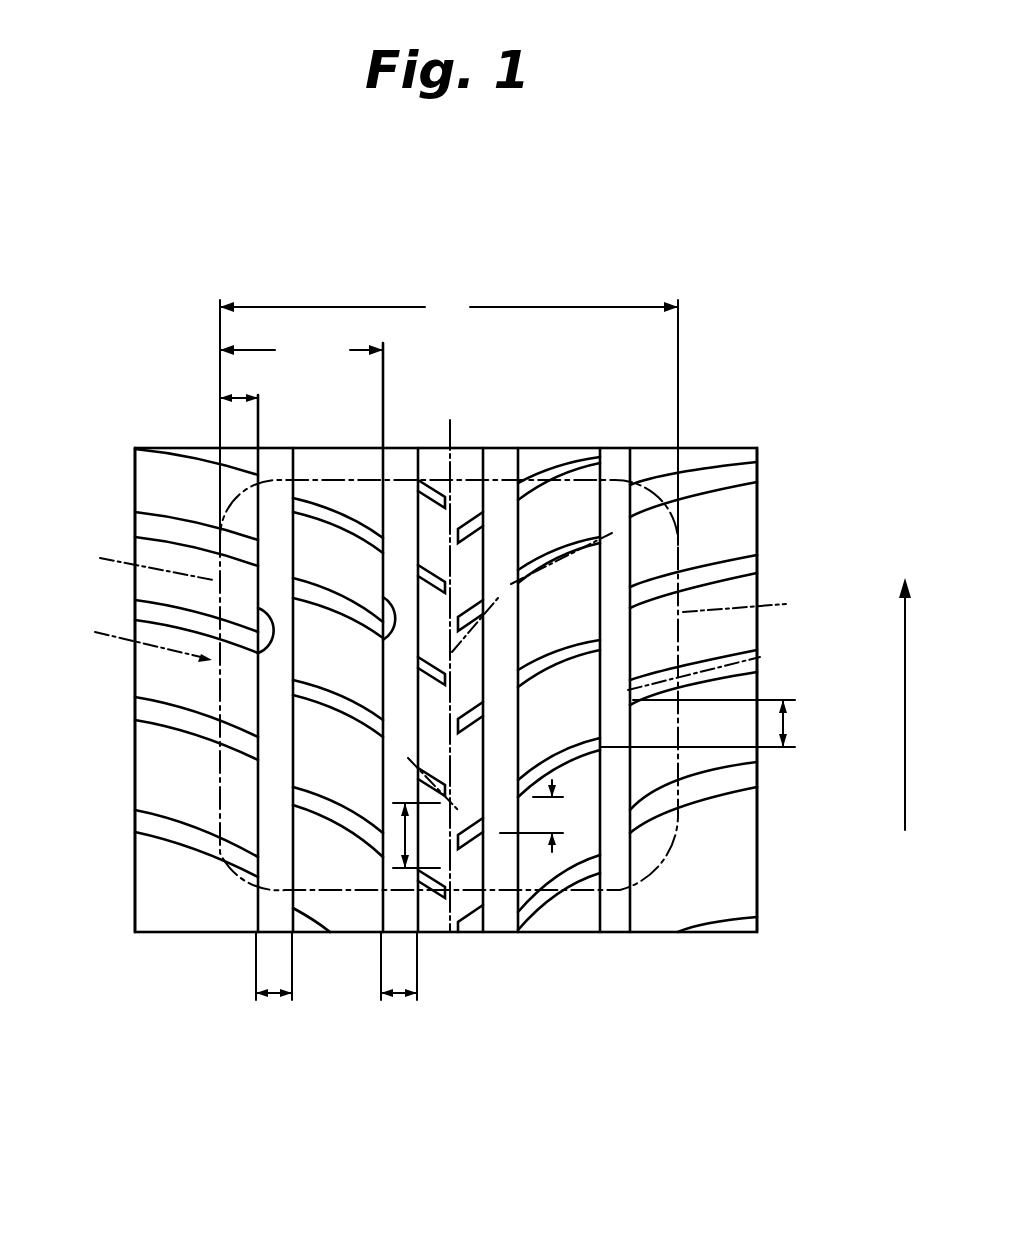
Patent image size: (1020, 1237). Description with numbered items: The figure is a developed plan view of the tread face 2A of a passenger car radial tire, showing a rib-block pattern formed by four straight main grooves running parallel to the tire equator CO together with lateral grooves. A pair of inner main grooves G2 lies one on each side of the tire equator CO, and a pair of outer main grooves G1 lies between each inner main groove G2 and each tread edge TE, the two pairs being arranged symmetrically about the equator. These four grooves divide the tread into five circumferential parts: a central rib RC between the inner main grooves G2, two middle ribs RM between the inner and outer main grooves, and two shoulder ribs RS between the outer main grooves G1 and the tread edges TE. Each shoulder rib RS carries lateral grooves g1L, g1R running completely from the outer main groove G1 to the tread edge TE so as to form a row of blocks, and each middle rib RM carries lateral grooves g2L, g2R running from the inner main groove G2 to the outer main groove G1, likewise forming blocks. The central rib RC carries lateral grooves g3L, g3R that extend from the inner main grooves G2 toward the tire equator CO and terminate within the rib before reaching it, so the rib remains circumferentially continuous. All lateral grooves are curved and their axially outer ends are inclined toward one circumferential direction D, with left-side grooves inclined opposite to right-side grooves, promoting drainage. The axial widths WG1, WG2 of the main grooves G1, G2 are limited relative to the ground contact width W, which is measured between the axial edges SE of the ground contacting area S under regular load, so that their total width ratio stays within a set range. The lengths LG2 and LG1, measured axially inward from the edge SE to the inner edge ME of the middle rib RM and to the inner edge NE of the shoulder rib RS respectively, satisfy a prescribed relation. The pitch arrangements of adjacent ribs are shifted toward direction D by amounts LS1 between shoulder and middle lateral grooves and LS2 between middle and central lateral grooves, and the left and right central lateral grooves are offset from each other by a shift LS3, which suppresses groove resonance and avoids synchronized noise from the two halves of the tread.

The tread face 2A is at (178, 477).
The tread edge TE is at (135, 888).
The shoulder rib RS is at (680, 447).
The middle rib RM is at (565, 447).
The central rib RC is at (468, 452).
The tire equator CO is at (456, 422).
The outer main groove G1 is at (278, 460).
The inner main groove G2 is at (398, 460).
The left shoulder lateral groove g1L is at (165, 830).
The right shoulder lateral groove g1R is at (740, 778).
The left middle lateral groove g2L is at (345, 830).
The right middle lateral groove g2R is at (600, 887).
The left central lateral groove g3L is at (437, 910).
The right central lateral groove g3R is at (478, 880).
The axially inner edge of shoulder rib NE is at (258, 655).
The axially inner edge of middle rib ME is at (383, 640).
The ground contacting area edge SE is at (442, 582).
The ground contacting area S is at (140, 638).
The ground contact width W is at (449, 307).
The length from ground contacting area edge to shoulder rib inner edge LG1 is at (240, 398).
The length from ground contacting area edge to middle rib inner edge LG2 is at (301, 349).
The axial width of outer main groove WG1 is at (273, 995).
The axial width of inner main groove WG2 is at (392, 995).
The shift between shoulder and middle lateral grooves LS1 is at (725, 723).
The shift between middle and central lateral grooves LS2 is at (545, 816).
The shift between left and right central lateral grooves LS3 is at (388, 803).
The circumferential direction D is at (907, 726).